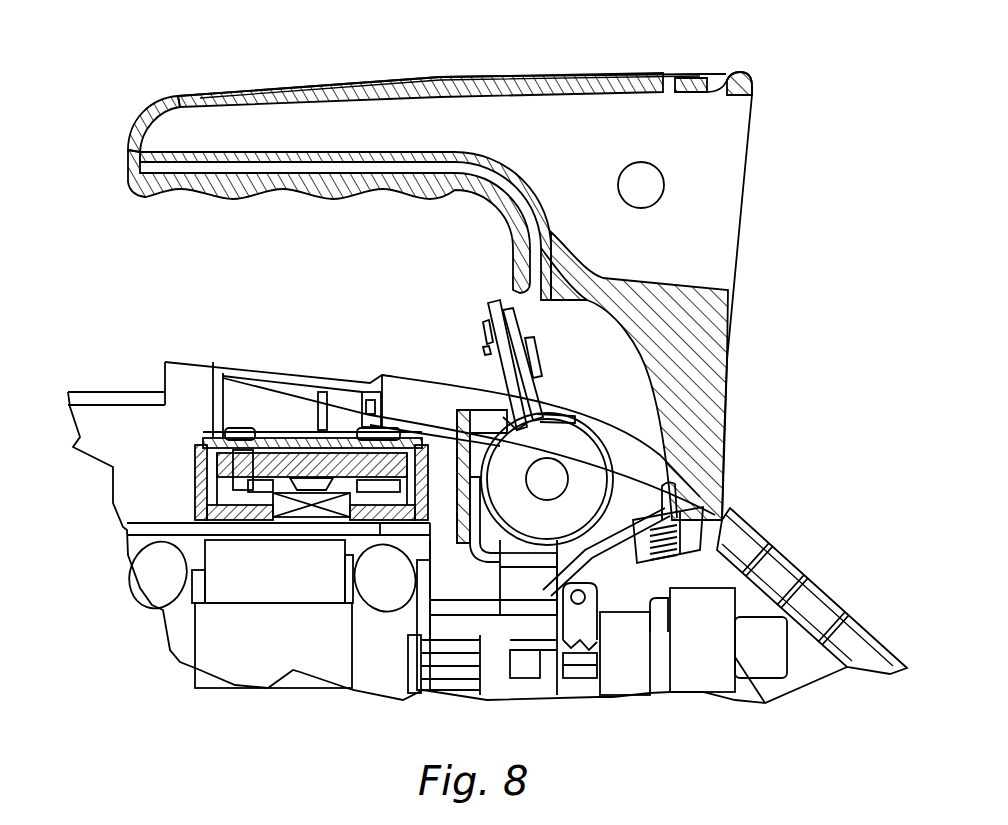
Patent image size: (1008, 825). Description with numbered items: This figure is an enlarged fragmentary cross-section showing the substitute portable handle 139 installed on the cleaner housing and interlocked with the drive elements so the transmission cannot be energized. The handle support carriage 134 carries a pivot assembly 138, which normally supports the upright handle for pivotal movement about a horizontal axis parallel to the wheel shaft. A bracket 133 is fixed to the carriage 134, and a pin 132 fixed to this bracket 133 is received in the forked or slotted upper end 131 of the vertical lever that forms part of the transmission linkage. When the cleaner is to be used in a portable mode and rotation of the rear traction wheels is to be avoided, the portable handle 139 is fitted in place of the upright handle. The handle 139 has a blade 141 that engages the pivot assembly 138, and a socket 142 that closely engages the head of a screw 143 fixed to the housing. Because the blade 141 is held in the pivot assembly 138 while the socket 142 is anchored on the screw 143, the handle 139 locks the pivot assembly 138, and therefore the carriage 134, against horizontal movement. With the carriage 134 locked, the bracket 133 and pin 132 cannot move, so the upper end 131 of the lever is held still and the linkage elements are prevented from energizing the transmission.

The upper end 131 is at (613, 630).
The pin 132 is at (598, 592).
The bracket 133 is at (352, 425).
The handle support carriage 134 is at (305, 462).
The pivot assembly 138 is at (563, 470).
The substitute portable handle 139 is at (456, 90).
The blade 141 is at (485, 349).
The socket 142 is at (668, 485).
The screw 143 is at (732, 505).